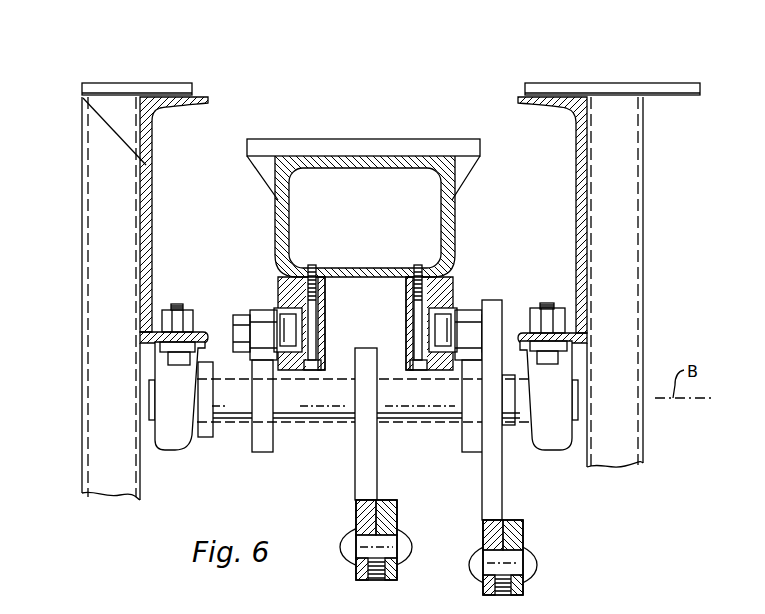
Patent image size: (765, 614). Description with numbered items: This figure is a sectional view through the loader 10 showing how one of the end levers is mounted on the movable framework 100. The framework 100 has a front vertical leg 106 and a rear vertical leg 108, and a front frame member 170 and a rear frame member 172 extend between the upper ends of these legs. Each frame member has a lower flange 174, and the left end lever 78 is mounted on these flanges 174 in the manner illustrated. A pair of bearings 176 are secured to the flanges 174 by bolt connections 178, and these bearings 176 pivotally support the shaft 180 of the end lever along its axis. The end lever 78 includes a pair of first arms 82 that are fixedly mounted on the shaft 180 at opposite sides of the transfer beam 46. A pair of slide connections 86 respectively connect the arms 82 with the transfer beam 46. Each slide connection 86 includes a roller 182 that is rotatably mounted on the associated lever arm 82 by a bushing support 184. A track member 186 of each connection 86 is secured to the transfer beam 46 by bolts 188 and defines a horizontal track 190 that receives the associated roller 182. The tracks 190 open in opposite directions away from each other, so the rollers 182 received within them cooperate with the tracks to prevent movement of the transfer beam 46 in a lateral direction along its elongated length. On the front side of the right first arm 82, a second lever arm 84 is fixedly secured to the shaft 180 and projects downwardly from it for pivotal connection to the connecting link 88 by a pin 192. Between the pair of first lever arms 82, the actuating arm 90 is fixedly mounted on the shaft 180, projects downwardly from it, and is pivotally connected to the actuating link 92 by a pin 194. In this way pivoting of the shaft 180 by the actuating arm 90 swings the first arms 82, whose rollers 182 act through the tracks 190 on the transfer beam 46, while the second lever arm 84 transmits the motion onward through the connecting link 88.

The loader 10 is at (438, 46).
The transfer beam 46 is at (462, 241).
The left end lever 78 is at (294, 468).
The first arms 82 is at (247, 372).
The second lever arm 84 is at (503, 496).
The slide connections 86 is at (270, 291).
The connecting link 88 is at (523, 527).
The actuating arm 90 is at (358, 482).
The actuating link 92 is at (398, 573).
The movable framework 100 is at (78, 501).
The front vertical leg 106 is at (630, 240).
The rear vertical leg 108 is at (97, 231).
The front frame member 170 is at (582, 163).
The rear frame member 172 is at (148, 166).
The lower flanges 174 is at (140, 343).
The bearings 176 is at (182, 450).
The bolt connections 178 is at (175, 318).
The shaft 180 is at (418, 413).
The roller 182 is at (275, 307).
The bushing support 184 is at (270, 335).
The track member 186 is at (410, 303).
The bolts 188 is at (410, 340).
The horizontal track 190 is at (296, 287).
The pin 192 is at (523, 559).
The pin 194 is at (397, 545).